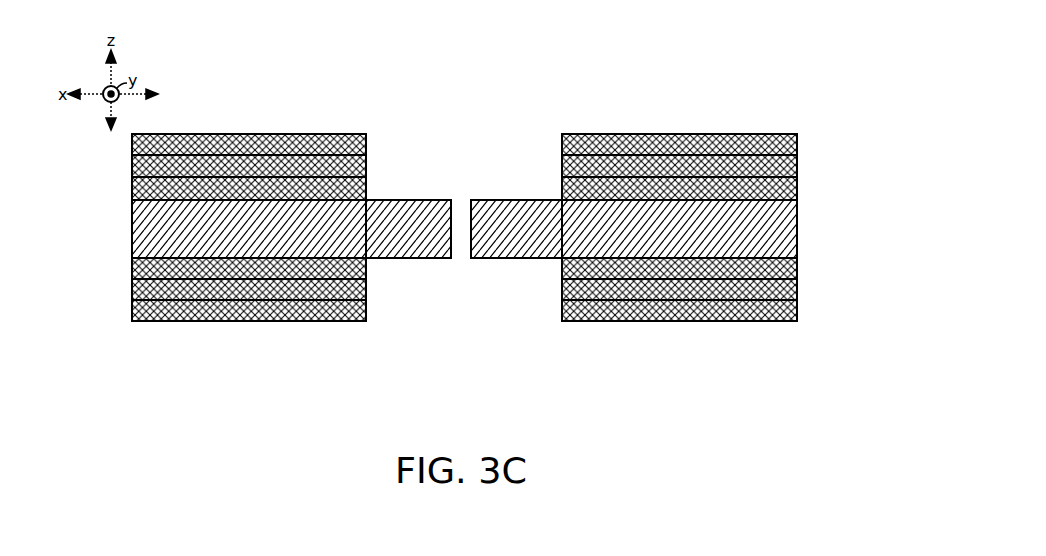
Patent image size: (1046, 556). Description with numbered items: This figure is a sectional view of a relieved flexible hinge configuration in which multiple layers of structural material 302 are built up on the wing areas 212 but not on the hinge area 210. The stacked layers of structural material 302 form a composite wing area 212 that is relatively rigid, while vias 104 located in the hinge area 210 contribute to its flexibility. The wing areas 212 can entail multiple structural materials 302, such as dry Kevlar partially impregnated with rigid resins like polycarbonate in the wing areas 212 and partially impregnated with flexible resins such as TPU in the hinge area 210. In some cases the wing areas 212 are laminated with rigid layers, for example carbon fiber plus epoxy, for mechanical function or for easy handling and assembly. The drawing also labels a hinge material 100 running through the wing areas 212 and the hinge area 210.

The via 104 is at (461, 194).
The structural material 302 is at (812, 198).
The hinge material 100 is at (797, 228).
The wing area 212 is at (360, 352).
The hinge area 210 is at (562, 360).